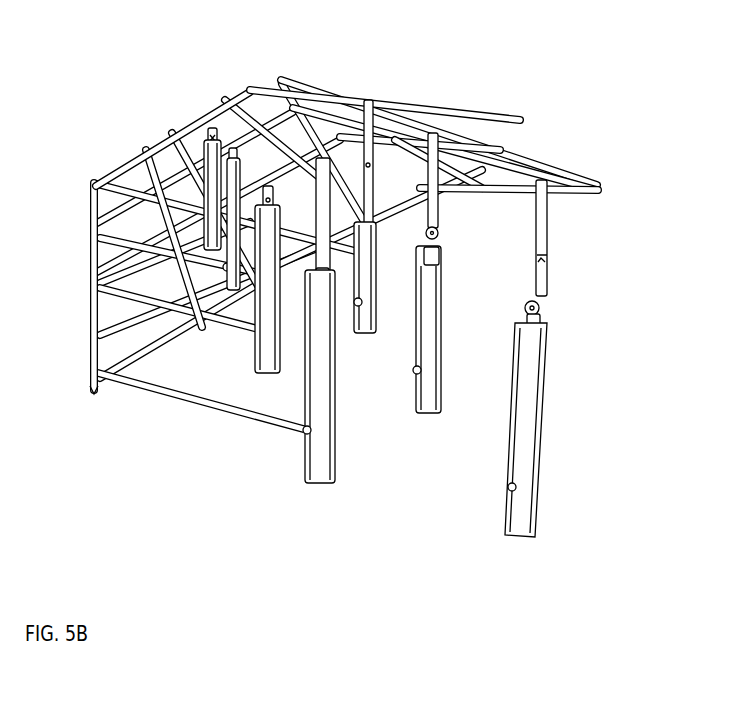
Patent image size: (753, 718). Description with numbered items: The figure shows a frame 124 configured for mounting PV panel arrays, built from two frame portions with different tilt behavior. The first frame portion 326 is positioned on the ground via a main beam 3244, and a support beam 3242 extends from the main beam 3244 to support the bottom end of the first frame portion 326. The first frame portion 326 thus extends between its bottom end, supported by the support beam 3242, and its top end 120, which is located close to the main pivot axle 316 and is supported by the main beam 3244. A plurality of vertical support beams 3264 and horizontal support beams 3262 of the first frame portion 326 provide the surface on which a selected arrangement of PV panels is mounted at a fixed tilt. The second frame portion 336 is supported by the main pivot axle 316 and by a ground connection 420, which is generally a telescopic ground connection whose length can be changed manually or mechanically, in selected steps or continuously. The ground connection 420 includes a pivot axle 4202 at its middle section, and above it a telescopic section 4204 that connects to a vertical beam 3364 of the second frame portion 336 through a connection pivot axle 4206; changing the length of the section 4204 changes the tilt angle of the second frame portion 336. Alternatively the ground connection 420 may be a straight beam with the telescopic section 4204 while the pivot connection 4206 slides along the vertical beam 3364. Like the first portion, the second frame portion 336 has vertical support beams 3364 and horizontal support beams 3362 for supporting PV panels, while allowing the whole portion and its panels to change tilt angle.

The frame 124 is at (108, 92).
The top end 120 is at (257, 88).
The horizontal support beams 3262 is at (223, 101).
The vertical support beams 3264 is at (117, 220).
The vertical support beams 3364 is at (368, 108).
The horizontal support beams 3362 is at (457, 137).
The second frame portion 336 is at (361, 137).
The main pivot axle 316 is at (415, 193).
The connection pivot axle 4206 is at (560, 193).
The telescopic section 4204 is at (545, 250).
The pivot axle 4202 is at (538, 310).
The ground connection 420 is at (566, 358).
The first frame portion 326 is at (268, 271).
The support beam 3242 is at (202, 412).
The main beam 3244 is at (326, 424).